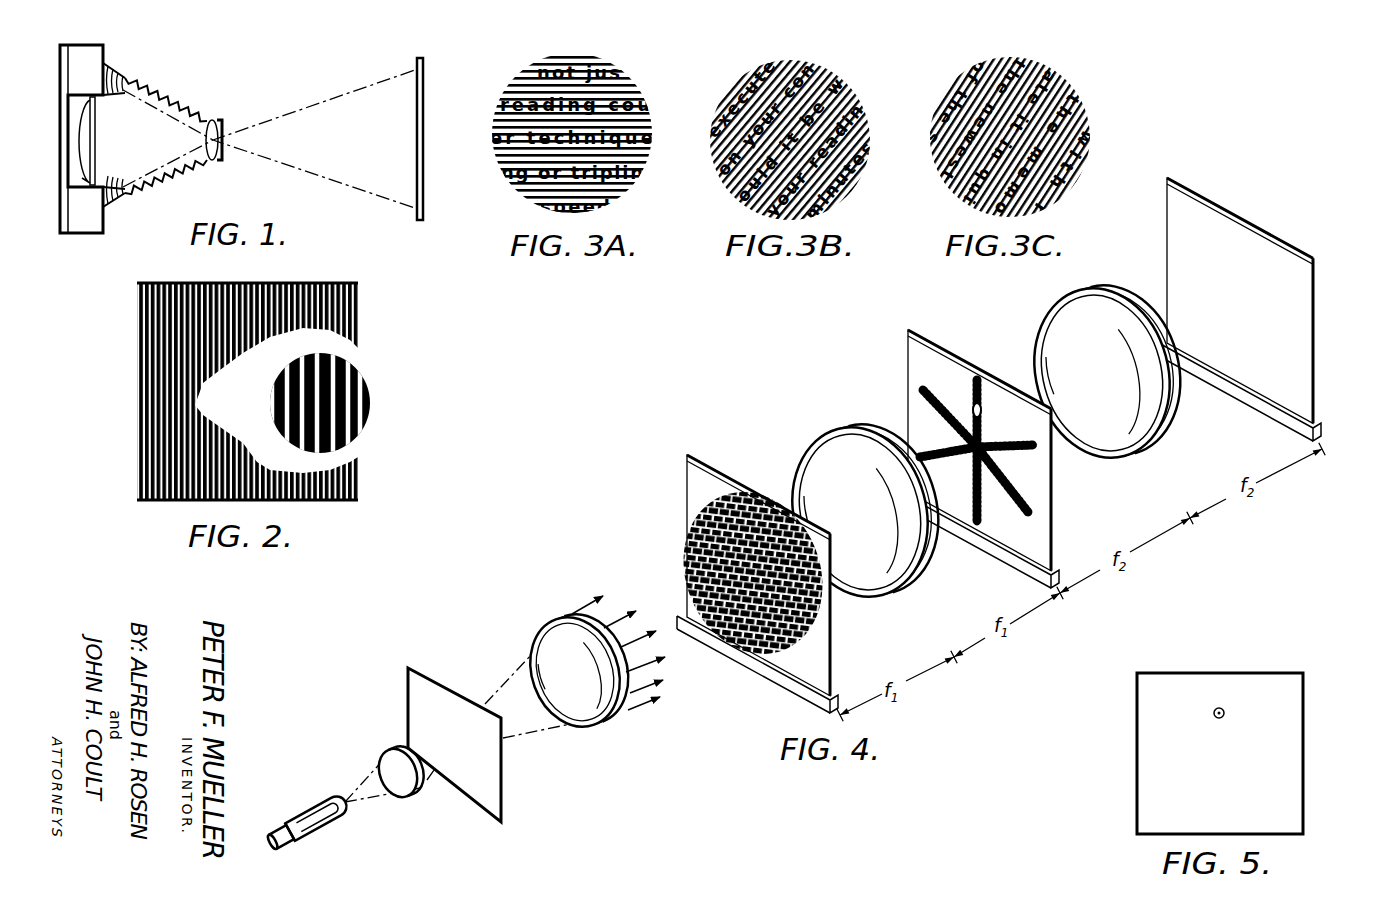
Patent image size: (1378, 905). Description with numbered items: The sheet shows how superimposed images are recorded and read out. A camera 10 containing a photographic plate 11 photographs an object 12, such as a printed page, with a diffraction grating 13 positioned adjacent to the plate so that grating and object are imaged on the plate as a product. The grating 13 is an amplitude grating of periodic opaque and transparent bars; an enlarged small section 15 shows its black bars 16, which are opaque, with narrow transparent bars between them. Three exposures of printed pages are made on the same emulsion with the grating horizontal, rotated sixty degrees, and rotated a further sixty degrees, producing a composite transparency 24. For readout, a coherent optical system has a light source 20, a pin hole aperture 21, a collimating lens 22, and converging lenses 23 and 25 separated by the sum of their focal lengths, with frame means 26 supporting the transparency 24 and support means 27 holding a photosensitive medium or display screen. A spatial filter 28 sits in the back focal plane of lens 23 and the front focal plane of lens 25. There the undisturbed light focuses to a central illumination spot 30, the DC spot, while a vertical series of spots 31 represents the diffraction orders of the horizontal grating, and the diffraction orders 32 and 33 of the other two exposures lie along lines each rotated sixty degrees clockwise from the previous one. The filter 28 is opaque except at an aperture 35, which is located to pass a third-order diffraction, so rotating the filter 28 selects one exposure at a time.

In FIG. 1, the camera 10 is at (150, 90).
In FIG. 1, the photographic plate 11 is at (83, 173).
In FIG. 1, the object 12 is at (423, 80).
In FIG. 1, the diffraction grating 13 is at (95, 152).
In FIG. 2, the diffraction grating 13 is at (137, 348).
In FIG. 2, the small section 15 is at (363, 387).
In FIG. 2, the black bars 16 is at (300, 350).
In FIG. 4, the light source 20 is at (332, 802).
In FIG. 4, the pin hole aperture 21 is at (452, 744).
In FIG. 4, the collimating lens 22 is at (560, 622).
In FIG. 4, the converging lens 23 is at (822, 438).
In FIG. 4, the transparency 24 is at (807, 602).
In FIG. 4, the converging lens 25 is at (1047, 323).
In FIG. 4, the frame means 26 is at (687, 490).
In FIG. 4, the support means 27 is at (1172, 238).
In FIG. 4, the spatial filter 28 is at (962, 360).
In FIG. 5, the spatial filter 28 is at (1137, 770).
In FIG. 4, the central illumination spot 30 is at (980, 446).
In FIG. 4, the vertical series of spots 31 is at (965, 382).
In FIG. 4, the diffraction orders 32 is at (940, 472).
In FIG. 4, the diffraction orders 33 is at (925, 405).
In FIG. 5, the aperture 35 is at (1225, 713).